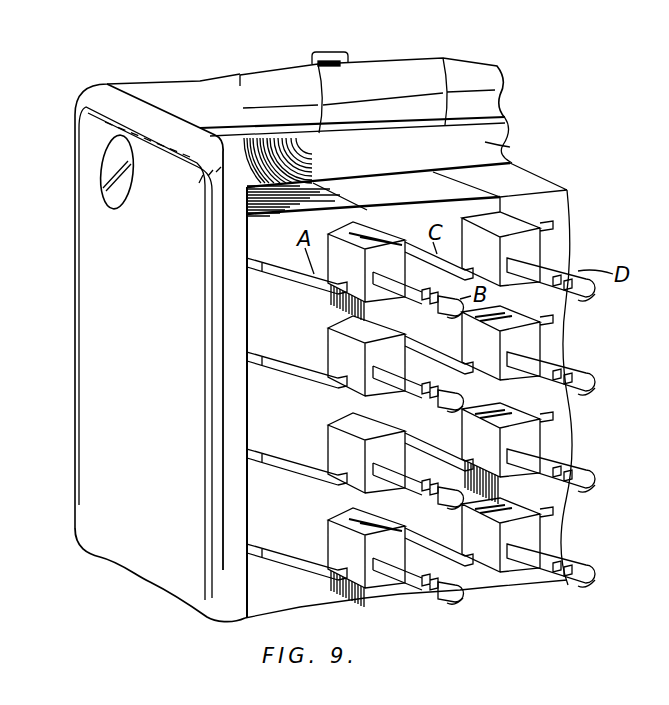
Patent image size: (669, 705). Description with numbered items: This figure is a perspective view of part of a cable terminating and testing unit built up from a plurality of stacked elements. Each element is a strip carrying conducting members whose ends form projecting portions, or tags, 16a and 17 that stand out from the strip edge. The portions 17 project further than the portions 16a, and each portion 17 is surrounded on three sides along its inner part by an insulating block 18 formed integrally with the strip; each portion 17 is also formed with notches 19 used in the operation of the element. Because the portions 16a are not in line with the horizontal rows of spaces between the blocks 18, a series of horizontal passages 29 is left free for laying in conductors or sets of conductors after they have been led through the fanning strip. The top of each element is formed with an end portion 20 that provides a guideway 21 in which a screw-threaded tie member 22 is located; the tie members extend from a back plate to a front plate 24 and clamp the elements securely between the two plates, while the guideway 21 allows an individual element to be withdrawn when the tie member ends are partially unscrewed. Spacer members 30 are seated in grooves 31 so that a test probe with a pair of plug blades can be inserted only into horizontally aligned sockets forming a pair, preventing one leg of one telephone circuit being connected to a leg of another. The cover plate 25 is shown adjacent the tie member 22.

The projecting portion 16a is at (447, 248).
The projecting portion 17 is at (364, 262).
The insulating block 18 is at (377, 231).
The notch 19 is at (561, 290).
The end portion 20 is at (236, 126).
The guideway 21 is at (213, 216).
The tie member 22 is at (510, 130).
The front plate 24 is at (142, 340).
The cover plate 25 is at (486, 143).
The horizontal passage 29 is at (386, 315).
The spacer member 30 is at (328, 52).
The groove 31 is at (355, 76).